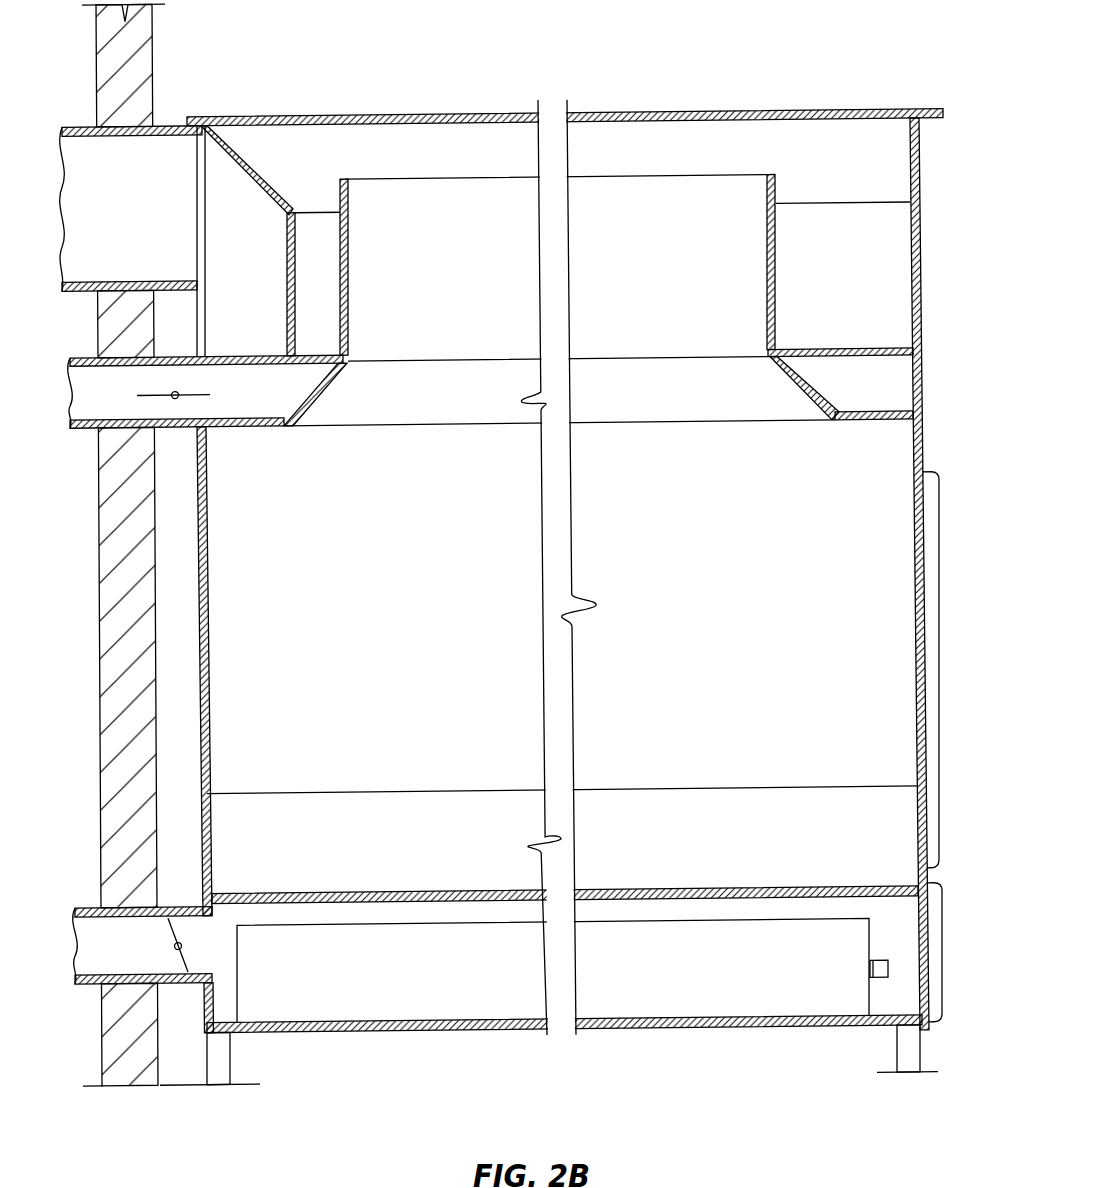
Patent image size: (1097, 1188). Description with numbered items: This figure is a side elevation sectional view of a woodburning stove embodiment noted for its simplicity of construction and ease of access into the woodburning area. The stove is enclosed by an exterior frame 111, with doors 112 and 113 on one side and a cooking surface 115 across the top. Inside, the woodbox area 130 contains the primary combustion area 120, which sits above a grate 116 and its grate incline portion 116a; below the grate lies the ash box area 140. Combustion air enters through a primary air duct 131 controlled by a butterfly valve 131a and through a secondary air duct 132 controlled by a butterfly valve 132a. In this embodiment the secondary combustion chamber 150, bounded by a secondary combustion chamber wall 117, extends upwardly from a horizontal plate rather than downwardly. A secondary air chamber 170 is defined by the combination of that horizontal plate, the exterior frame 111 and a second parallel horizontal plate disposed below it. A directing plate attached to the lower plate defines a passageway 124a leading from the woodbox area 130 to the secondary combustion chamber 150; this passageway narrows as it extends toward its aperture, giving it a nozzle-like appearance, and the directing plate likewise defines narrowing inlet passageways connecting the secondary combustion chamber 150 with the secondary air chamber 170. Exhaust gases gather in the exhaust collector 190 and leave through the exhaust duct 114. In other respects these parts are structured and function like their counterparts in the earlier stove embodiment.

The exterior frame 111 is at (918, 270).
The door 112 is at (928, 552).
The door 113 is at (942, 972).
The exhaust duct 114 is at (138, 221).
The cooking surface 115 is at (695, 118).
The grate 116 is at (743, 893).
The grate incline portion 116a is at (698, 826).
The secondary combustion chamber wall 117 is at (775, 222).
The primary combustion area 120 is at (417, 883).
The passageway 124a is at (405, 392).
The woodbox area 130 is at (657, 561).
The primary air duct 131 is at (198, 950).
The butterfly valve 131a is at (178, 937).
The secondary air duct 132 is at (125, 383).
The butterfly valve 132a is at (190, 399).
The ash box area 140 is at (757, 1003).
The secondary combustion chamber 150 is at (662, 269).
The secondary air chamber 170 is at (885, 398).
The exhaust collector 190 is at (228, 196).